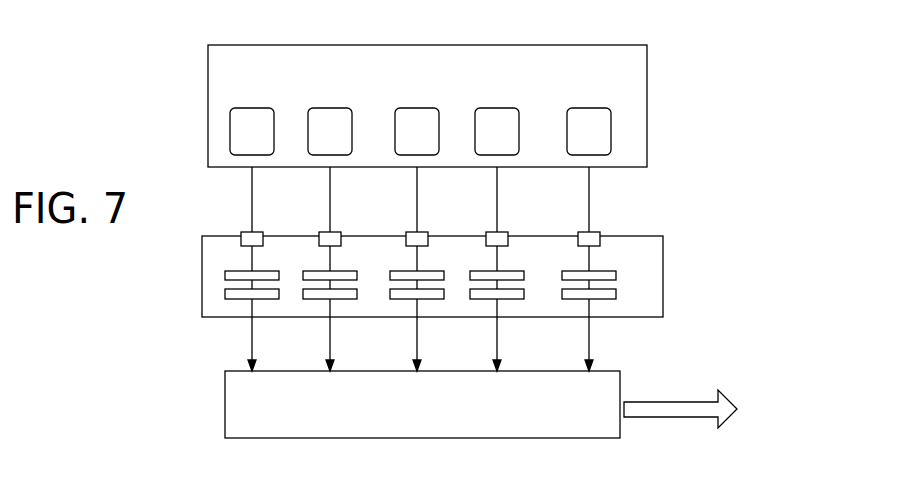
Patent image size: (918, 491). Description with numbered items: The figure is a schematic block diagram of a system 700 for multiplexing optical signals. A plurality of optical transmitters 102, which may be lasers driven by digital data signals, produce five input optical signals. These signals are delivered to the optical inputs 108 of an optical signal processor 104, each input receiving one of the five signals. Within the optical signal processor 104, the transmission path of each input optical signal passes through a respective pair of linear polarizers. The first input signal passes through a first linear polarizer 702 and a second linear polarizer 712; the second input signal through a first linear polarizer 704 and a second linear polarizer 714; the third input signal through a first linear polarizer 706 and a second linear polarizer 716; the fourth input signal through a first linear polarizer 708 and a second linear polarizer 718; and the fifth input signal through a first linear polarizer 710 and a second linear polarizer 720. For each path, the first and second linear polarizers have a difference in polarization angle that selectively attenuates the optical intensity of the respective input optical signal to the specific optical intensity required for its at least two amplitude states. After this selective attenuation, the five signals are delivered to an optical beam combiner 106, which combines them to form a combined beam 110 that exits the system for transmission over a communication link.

The system 700 is at (748, 106).
The optical transmitters 102 is at (648, 73).
The optical signal processor 104 is at (664, 285).
The optical beam combiner 106 is at (624, 382).
The optical inputs 108 is at (261, 231).
The combined beam 110 is at (672, 418).
The first linear polarizer 702 is at (298, 259).
The first linear polarizer 704 is at (376, 259).
The first linear polarizer 706 is at (463, 259).
The first linear polarizer 708 is at (543, 259).
The first linear polarizer 710 is at (635, 259).
The second linear polarizer 712 is at (243, 300).
The second linear polarizer 714 is at (321, 300).
The second linear polarizer 716 is at (408, 300).
The second linear polarizer 718 is at (488, 300).
The second linear polarizer 720 is at (580, 300).